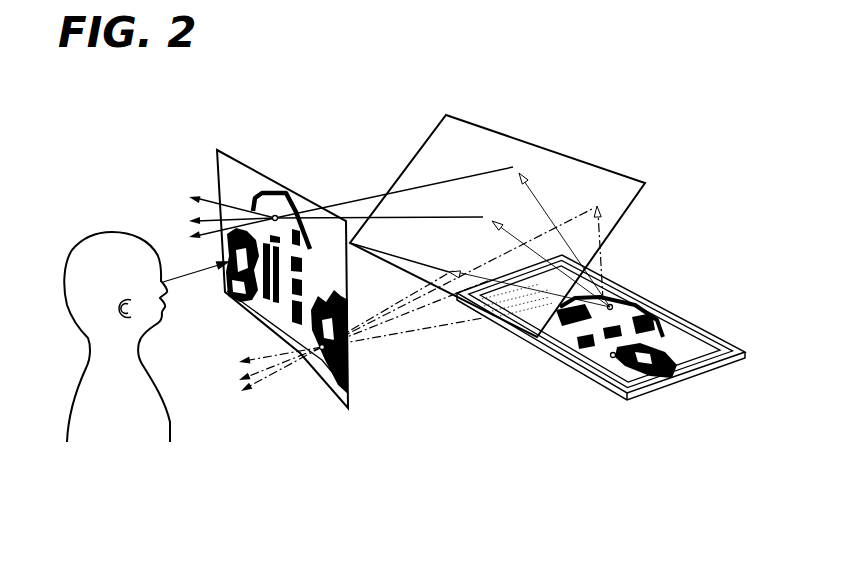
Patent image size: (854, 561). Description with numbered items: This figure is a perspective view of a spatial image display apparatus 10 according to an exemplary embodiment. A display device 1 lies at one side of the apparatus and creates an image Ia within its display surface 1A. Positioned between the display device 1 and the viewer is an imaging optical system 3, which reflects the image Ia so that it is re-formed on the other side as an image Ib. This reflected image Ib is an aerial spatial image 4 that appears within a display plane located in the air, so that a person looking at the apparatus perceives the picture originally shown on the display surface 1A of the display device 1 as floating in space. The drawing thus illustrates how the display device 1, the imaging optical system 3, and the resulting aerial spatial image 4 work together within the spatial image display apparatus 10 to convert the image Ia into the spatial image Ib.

The spatial image display apparatus 10 is at (634, 77).
The display device 1 is at (713, 331).
The display surface 1A is at (680, 337).
The image Ia is at (633, 312).
The imaging optical system 3 is at (500, 131).
The aerial spatial image 4 is at (270, 178).
The image Ib is at (294, 190).